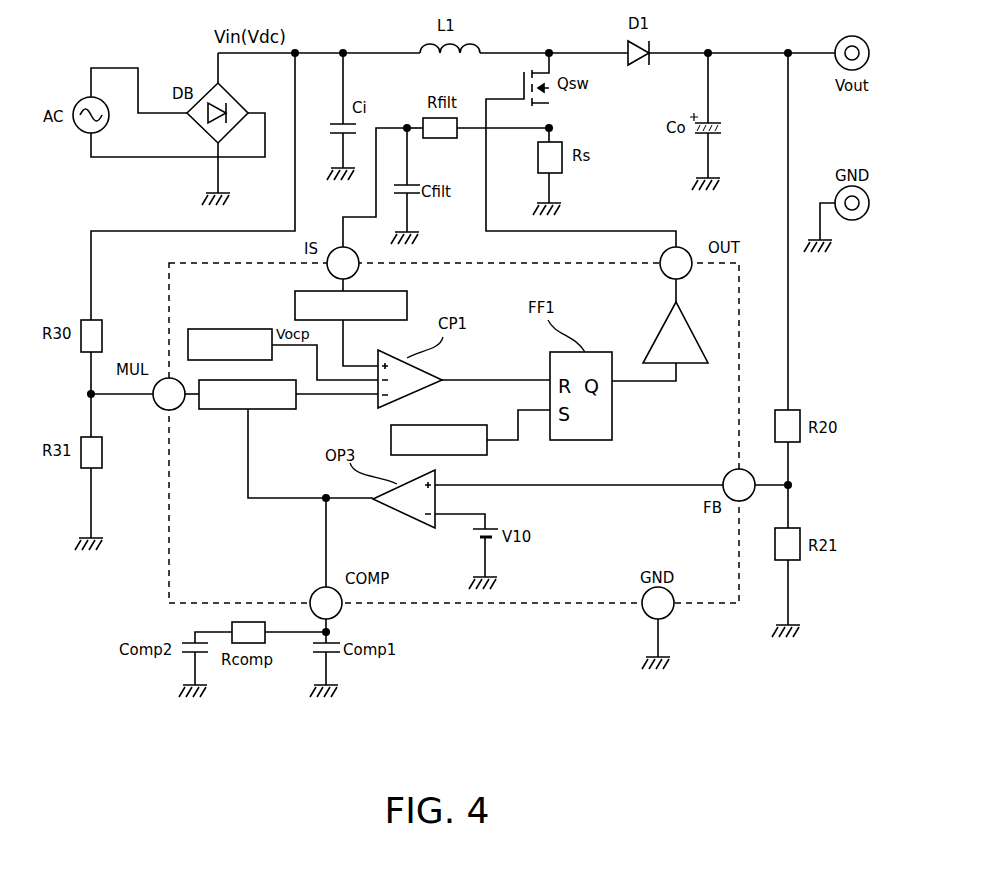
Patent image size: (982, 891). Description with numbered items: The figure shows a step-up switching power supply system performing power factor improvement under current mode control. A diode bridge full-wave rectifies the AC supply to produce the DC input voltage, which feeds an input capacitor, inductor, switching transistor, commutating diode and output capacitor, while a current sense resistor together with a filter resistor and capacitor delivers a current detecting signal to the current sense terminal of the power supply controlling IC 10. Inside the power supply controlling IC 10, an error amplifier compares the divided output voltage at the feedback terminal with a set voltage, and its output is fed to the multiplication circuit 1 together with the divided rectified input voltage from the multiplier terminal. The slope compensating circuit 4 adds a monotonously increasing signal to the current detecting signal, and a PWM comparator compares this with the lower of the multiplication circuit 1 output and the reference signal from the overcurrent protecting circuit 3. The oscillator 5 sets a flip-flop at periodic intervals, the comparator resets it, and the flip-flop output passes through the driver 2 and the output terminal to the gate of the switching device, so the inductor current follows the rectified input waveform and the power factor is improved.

The multiplication circuit 1 is at (238, 409).
The driver 2 is at (668, 315).
The overcurrent protecting circuit 3 is at (233, 329).
The slope compensating circuit 4 is at (295, 305).
The oscillator 5 is at (490, 455).
The power supply controlling IC 10 is at (520, 603).